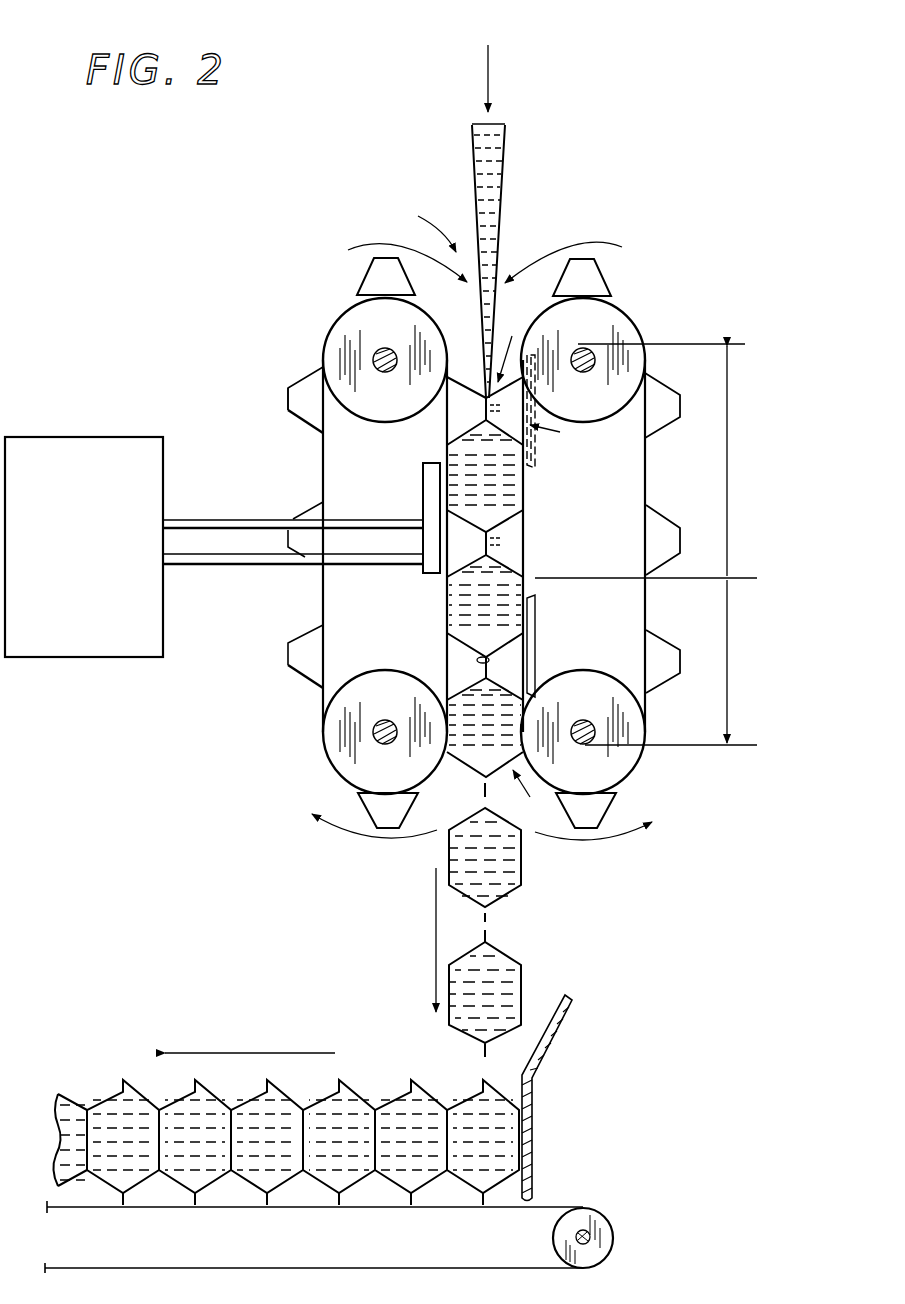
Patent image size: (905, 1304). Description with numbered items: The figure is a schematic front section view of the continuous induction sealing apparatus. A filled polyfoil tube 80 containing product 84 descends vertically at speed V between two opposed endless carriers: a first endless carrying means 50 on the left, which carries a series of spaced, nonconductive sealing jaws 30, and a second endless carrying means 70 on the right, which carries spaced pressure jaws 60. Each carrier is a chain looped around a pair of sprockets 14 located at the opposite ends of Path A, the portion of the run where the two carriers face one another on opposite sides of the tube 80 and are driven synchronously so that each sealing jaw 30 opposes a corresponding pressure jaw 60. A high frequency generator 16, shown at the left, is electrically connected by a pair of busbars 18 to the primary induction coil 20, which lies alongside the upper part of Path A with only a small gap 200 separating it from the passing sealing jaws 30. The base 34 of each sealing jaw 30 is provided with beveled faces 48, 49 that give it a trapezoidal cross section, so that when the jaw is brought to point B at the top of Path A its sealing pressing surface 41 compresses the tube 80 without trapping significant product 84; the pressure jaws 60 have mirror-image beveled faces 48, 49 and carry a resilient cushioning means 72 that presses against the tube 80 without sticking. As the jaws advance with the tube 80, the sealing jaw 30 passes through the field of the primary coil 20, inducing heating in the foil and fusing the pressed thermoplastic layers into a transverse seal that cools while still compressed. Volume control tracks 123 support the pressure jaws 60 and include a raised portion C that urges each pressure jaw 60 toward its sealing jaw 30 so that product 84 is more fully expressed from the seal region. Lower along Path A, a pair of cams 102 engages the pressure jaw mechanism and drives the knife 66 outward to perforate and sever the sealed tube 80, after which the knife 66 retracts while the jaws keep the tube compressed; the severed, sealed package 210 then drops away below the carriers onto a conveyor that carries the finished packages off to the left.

The sprockets 14 is at (378, 337).
The high frequency generator 16 is at (46, 447).
The busbars 18 is at (212, 522).
The primary induction coil 20 is at (423, 492).
The gap 200 is at (442, 470).
The sealing jaws 30 is at (362, 281).
The base 34 is at (326, 418).
The sealing pressing surface 41 is at (288, 402).
The beveled face 48 is at (305, 378).
The beveled face 49 is at (305, 425).
The first endless carrying means 50 is at (320, 609).
The pressure jaws 60 is at (600, 271).
The knife 66 is at (477, 660).
The second endless carrying means 70 is at (654, 604).
The cushioning means 72 is at (680, 410).
The polyfoil tube 80 is at (474, 172).
The product 84 is at (476, 128).
The cams 102 is at (535, 620).
The volume control tracks 123 is at (535, 462).
The sealed package 210 is at (522, 972).
The speed V is at (498, 78).
The Path A is at (519, 570).
The point B is at (426, 223).
The raised portion C is at (555, 438).